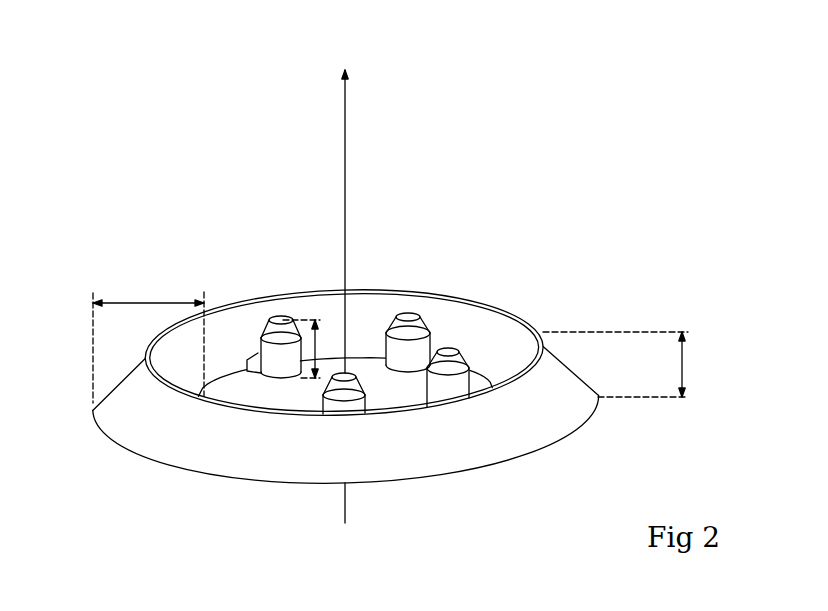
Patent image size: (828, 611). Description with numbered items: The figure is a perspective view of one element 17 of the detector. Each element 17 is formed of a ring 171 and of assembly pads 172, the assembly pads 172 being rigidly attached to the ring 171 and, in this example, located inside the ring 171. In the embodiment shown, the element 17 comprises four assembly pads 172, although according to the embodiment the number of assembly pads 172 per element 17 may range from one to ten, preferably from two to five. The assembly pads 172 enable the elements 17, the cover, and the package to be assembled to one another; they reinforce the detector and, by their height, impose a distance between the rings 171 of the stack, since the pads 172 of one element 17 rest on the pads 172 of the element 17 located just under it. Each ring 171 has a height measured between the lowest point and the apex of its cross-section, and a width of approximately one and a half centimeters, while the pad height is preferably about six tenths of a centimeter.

The element 17 is at (540, 118).
The ring 171 is at (436, 289).
The assembly pads 172 is at (279, 313).